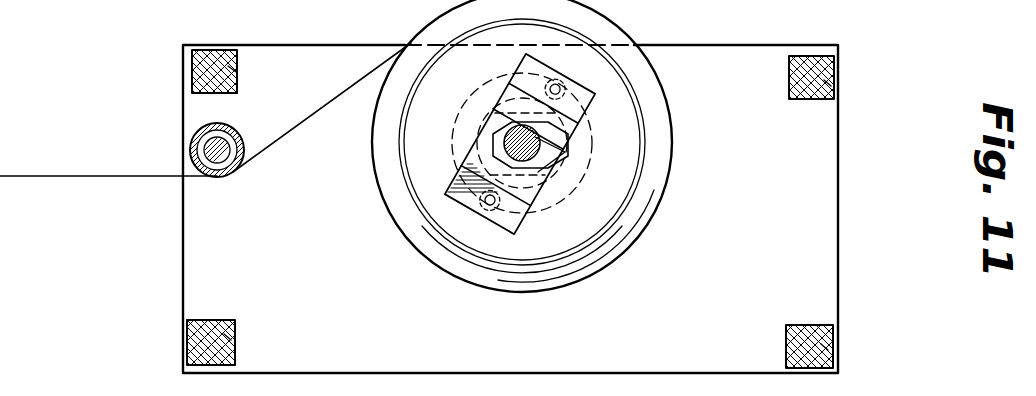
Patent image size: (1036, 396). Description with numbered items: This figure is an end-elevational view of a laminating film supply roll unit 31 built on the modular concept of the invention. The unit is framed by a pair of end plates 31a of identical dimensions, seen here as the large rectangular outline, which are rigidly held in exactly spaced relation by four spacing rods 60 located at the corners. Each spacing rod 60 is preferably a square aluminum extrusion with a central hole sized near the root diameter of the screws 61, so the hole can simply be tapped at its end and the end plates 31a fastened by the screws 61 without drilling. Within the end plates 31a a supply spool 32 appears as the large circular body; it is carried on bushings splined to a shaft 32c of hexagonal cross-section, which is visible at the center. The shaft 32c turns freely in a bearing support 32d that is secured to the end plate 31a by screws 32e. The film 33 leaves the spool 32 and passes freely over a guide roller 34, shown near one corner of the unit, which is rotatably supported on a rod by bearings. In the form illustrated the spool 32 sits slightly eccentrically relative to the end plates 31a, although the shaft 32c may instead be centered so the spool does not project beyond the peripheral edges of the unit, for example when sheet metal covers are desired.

The laminating film supply roll unit 31 is at (841, 216).
The end plate 31a is at (272, 110).
The supply spool 32 is at (421, 250).
The shaft 32c is at (547, 157).
The bearing support 32d is at (508, 232).
The screws 32e is at (490, 206).
The film 33 is at (320, 108).
The guide roller 34 is at (199, 134).
The spacing rod 60 is at (193, 78).
The screws 61 is at (240, 72).